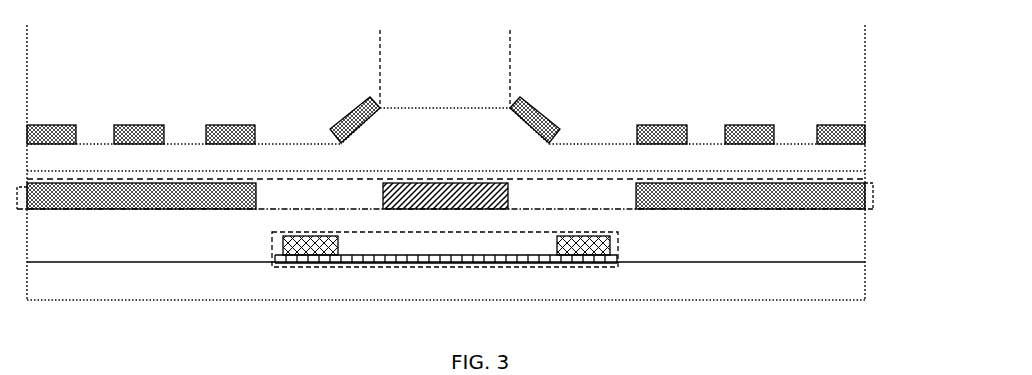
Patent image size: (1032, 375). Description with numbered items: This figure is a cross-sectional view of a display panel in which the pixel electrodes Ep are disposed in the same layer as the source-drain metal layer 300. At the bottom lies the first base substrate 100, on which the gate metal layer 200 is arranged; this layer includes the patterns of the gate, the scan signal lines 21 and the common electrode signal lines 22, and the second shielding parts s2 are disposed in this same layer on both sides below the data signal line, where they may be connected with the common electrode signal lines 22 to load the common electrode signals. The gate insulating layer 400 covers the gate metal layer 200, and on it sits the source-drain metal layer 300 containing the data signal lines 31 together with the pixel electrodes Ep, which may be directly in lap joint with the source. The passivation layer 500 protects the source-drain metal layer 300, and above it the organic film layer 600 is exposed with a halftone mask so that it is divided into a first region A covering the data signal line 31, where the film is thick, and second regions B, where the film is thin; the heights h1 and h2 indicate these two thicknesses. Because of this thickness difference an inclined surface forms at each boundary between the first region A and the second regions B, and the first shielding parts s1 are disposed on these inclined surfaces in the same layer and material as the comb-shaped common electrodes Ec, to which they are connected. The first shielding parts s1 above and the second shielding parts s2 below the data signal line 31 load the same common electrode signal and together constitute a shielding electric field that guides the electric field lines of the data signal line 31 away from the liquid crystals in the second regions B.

The first base substrate 100 is at (865, 280).
The gate metal layer 200 is at (479, 285).
The scan signal lines 21 is at (446, 297).
The common electrode signal lines 22 is at (453, 255).
The source-drain metal layer 300 is at (873, 196).
The data signal lines 31 is at (508, 196).
The gate insulating layer 400 is at (865, 222).
The passivation layer 500 is at (865, 176).
The organic film layer 600 is at (865, 157).
The pixel electrodes Ep is at (752, 313).
The common electrodes Ec is at (228, 117).
The first shielding parts s1 is at (541, 112).
The second shielding parts s2 is at (582, 313).
The first height h1 is at (407, 110).
The second height h2 is at (183, 145).
The first region A is at (510, 40).
The second regions B is at (380, 40).